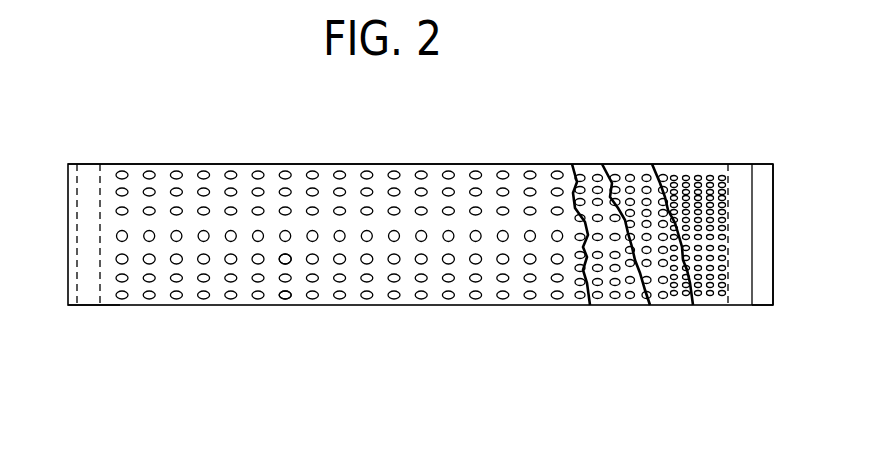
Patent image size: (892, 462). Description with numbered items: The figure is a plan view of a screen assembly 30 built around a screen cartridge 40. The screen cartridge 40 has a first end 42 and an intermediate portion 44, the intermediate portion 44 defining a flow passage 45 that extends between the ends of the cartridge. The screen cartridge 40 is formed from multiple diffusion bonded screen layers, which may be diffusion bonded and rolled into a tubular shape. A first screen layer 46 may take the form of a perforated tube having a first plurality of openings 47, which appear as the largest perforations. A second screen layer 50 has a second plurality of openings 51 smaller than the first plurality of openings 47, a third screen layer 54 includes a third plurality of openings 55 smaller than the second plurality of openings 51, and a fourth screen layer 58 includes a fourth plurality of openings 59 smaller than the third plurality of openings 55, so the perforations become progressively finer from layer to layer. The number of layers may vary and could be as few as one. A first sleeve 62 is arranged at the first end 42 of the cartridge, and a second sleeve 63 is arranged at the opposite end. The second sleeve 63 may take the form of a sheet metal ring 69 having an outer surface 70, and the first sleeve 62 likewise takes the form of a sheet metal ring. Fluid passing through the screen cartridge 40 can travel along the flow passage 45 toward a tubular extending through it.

The screen assembly 30 is at (417, 335).
The screen cartridge 40 is at (336, 182).
The first end 42 is at (89, 288).
The intermediate portion 44 is at (269, 164).
The flow passage 45 is at (86, 212).
The first screen layer 46 is at (275, 300).
The first plurality of openings 47 is at (300, 262).
The second screen layer 50 is at (588, 175).
The second plurality of openings 51 is at (580, 265).
The third screen layer 54 is at (665, 305).
The third plurality of openings 55 is at (689, 301).
The fourth screen layer 58 is at (680, 173).
The fourth plurality of openings 59 is at (710, 160).
The first sleeve 62 is at (86, 308).
The second sleeve 63 is at (797, 280).
The sheet metal ring 69 is at (818, 187).
The outer surface 70 is at (762, 164).